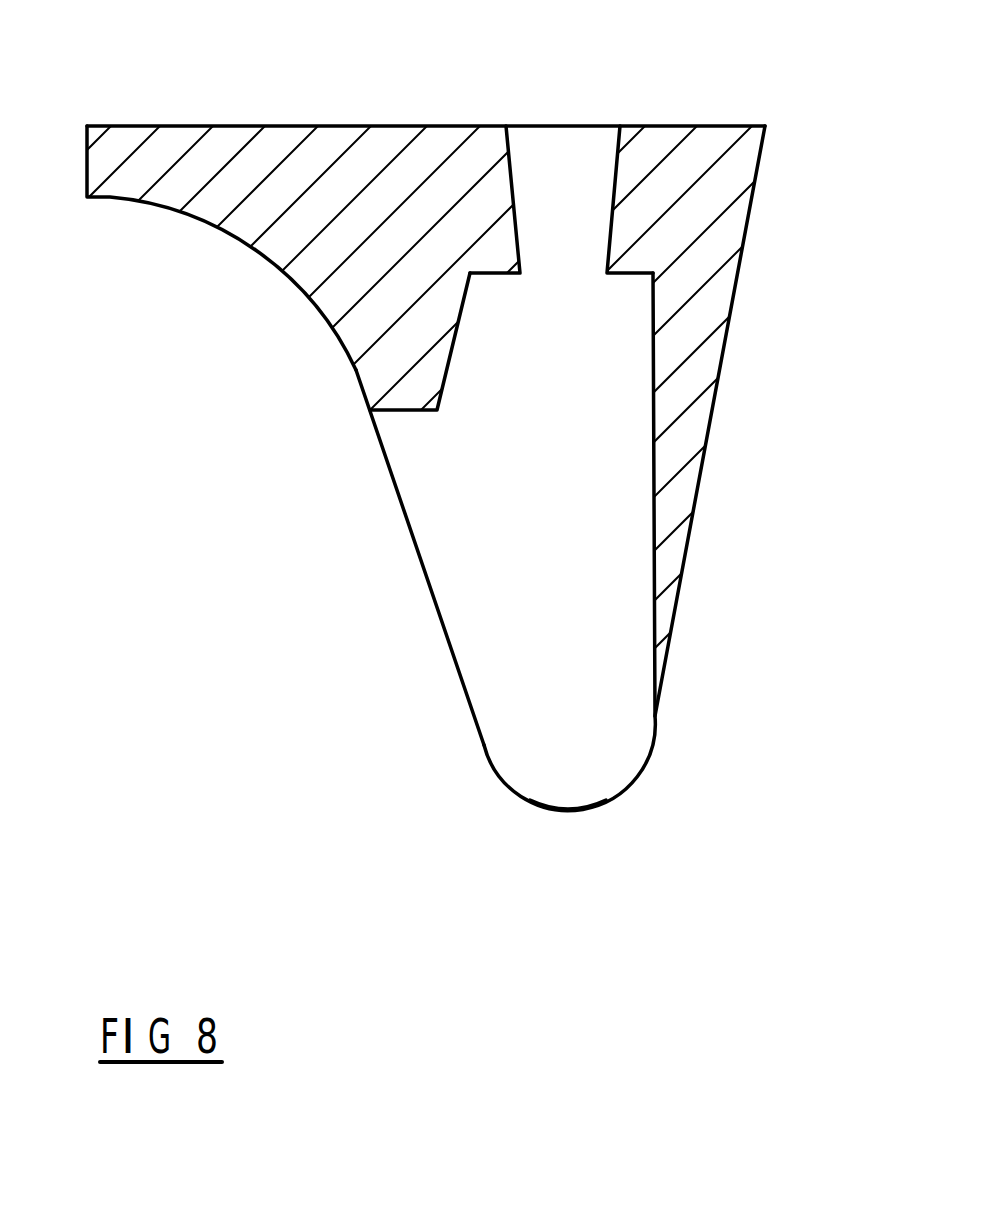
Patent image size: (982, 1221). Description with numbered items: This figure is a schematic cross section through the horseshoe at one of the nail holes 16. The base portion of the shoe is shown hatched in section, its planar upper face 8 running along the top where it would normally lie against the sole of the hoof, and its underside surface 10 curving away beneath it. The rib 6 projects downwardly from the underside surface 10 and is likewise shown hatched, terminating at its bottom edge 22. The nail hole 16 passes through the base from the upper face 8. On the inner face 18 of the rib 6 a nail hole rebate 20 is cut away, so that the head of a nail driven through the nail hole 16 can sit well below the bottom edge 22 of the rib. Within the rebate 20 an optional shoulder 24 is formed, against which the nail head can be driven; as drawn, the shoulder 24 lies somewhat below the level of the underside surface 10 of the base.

The rib 6 is at (712, 485).
The planar upper face 8 is at (367, 126).
The underside surface 10 is at (110, 222).
The nail hole 16 is at (565, 172).
The inner face 18 is at (357, 383).
The nail hole rebate 20 is at (510, 612).
The bottom edge 22 is at (567, 812).
The shoulder 24 is at (495, 275).